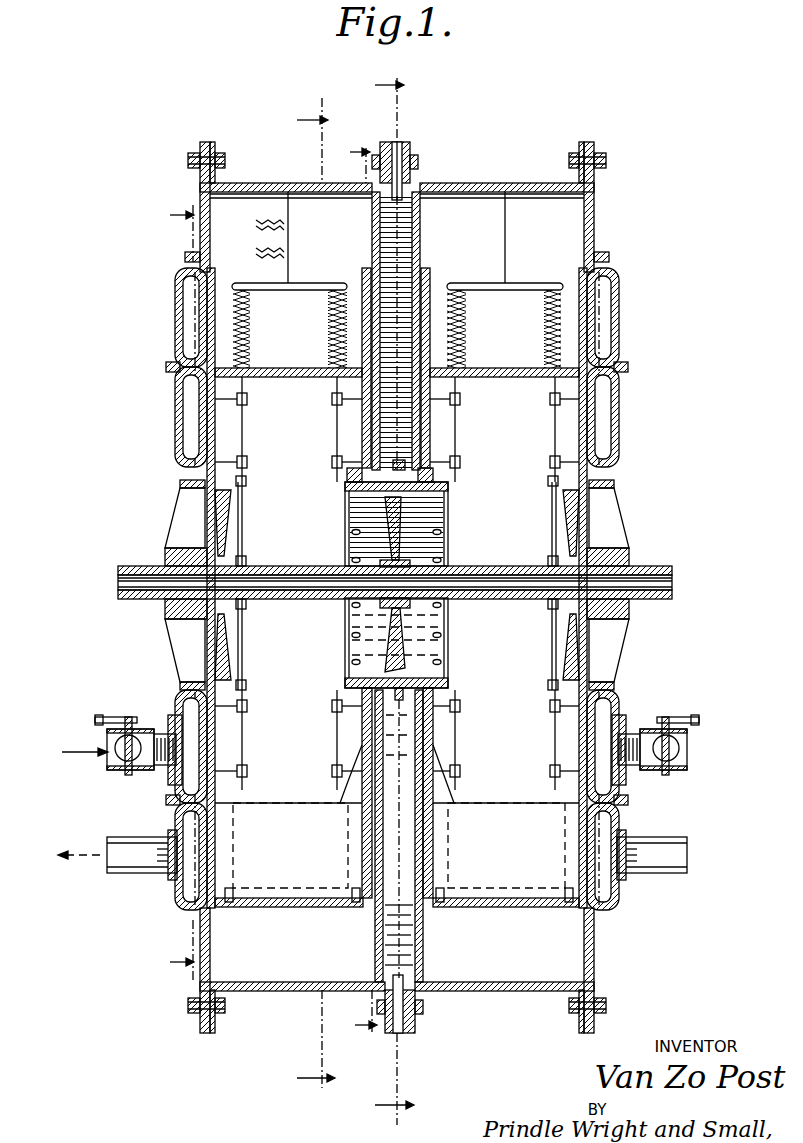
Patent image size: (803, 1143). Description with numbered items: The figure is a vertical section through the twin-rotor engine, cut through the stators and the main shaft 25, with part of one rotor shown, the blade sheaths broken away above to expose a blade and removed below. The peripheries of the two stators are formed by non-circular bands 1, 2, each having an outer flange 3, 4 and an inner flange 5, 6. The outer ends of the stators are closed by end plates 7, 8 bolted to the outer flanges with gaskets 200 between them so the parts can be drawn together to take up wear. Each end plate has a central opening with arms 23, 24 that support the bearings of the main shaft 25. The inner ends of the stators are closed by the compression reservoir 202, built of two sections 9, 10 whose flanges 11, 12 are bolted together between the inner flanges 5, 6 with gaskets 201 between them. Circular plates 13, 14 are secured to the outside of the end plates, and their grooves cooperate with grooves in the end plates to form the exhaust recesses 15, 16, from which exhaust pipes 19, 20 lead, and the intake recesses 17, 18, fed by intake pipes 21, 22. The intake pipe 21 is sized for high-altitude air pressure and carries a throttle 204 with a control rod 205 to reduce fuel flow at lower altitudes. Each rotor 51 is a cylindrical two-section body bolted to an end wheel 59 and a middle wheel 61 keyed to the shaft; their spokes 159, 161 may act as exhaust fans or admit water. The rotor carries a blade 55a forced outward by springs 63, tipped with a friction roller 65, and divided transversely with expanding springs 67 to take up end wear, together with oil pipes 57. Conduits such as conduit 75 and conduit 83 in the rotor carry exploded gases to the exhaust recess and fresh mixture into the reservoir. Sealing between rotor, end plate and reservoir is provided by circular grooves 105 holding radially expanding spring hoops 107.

The non-circular band 1 is at (268, 185).
The non-circular band 2 is at (487, 184).
The outer flange 3 is at (212, 142).
The outer flange 4 is at (582, 142).
The gaskets 200 is at (204, 142).
The inner flange 5 is at (388, 145).
The inner flange 6 is at (408, 146).
The end plate 7 is at (200, 196).
The end plate 8 is at (595, 208).
The compression reservoir section 9 is at (372, 216).
The compression reservoir section 10 is at (420, 222).
The flange 11 is at (385, 142).
The flange 12 is at (405, 142).
The gaskets 201 is at (400, 142).
The compression reservoir 202 is at (420, 244).
The circular grooves 105 is at (192, 256).
The spring hoops 107 is at (372, 260).
The friction roller 65 is at (328, 193).
The blade 55a is at (232, 220).
The transversely expanding springs 67 is at (270, 232).
The rotor 51 is at (212, 440).
The springs 63 is at (250, 315).
The oil pipes 57 is at (247, 437).
The exhaust recess 15 is at (188, 302).
The exhaust recess 16 is at (612, 318).
The intake recess 17 is at (188, 412).
The intake recess 18 is at (612, 420).
The circular plate 13 is at (182, 366).
The circular plate 14 is at (618, 366).
The arms 23 is at (190, 505).
The arms 24 is at (610, 520).
The spokes 159 is at (218, 515).
The end wheel 59 is at (246, 487).
The middle wheel 61 is at (348, 490).
The spokes 161 is at (402, 525).
The main shaft 25 is at (640, 568).
The conduit 75 is at (250, 840).
The conduit 83 is at (350, 785).
The exhaust pipe 19 is at (130, 862).
The exhaust pipe 20 is at (670, 862).
The intake pipe 21 is at (112, 755).
The intake pipe 22 is at (688, 760).
The throttle 204 is at (128, 768).
The control rod 205 is at (110, 718).